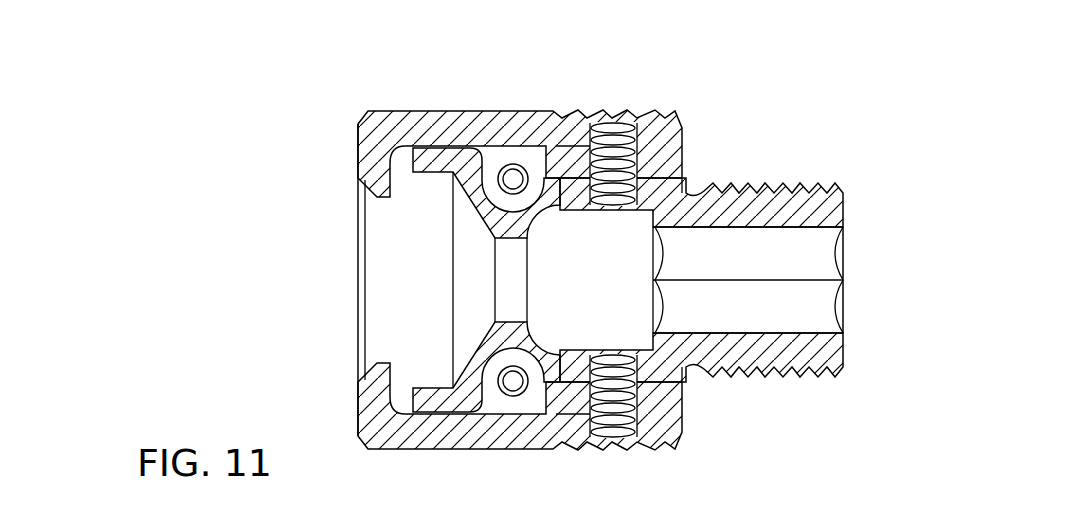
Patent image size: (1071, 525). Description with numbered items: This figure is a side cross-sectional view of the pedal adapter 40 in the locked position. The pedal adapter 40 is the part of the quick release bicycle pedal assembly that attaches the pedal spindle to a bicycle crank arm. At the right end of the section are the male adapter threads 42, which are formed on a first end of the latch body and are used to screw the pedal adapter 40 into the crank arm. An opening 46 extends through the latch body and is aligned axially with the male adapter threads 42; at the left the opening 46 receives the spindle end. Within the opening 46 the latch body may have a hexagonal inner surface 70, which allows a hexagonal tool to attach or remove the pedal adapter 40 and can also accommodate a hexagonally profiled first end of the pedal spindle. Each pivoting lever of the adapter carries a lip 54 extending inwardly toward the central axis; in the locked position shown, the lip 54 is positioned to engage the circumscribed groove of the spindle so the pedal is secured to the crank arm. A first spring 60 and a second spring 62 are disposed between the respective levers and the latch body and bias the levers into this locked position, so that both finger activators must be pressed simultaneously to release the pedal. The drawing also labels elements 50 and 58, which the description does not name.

The pedal adapter 40 is at (136, 86).
The male adapter threads 42 is at (790, 193).
The opening 46 is at (334, 245).
The cap 50 is at (432, 120).
The lip 54 is at (357, 153).
The O-ring seal 58 is at (513, 178).
The first spring 60 is at (605, 420).
The second spring 62 is at (620, 130).
The hexagonal inner surface 70 is at (812, 308).